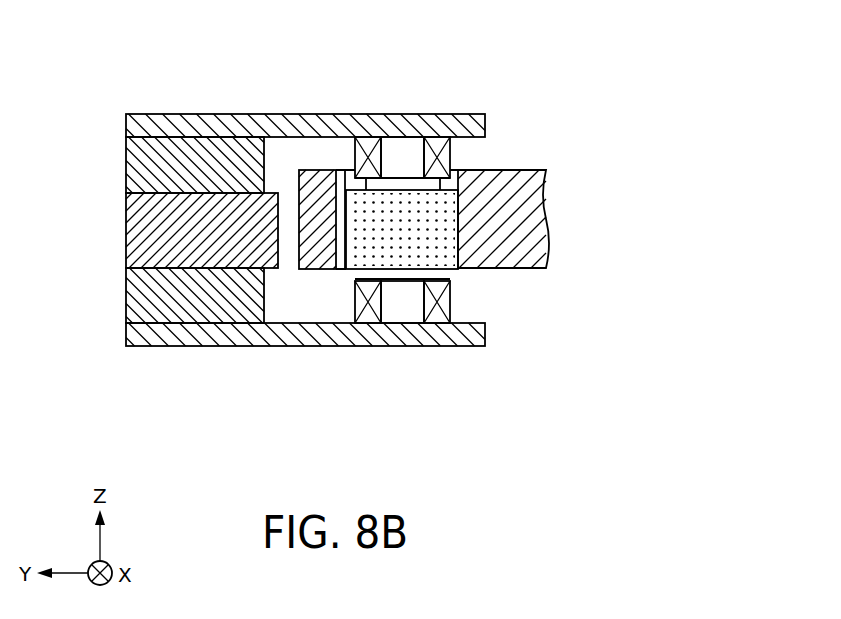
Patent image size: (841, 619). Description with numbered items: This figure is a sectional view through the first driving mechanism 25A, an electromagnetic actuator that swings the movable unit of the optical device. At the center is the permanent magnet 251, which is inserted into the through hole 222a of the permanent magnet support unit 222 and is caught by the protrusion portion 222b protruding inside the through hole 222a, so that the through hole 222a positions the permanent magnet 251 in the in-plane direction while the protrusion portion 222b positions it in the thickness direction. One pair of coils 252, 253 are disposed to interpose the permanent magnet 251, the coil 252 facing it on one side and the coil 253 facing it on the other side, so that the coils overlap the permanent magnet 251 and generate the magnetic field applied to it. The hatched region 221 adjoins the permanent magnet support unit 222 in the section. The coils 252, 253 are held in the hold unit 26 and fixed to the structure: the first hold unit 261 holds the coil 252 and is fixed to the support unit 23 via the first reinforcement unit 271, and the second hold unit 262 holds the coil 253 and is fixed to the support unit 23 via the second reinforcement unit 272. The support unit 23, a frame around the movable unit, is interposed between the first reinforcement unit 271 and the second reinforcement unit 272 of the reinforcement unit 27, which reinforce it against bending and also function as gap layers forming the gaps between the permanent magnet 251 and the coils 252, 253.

The first driving mechanism 25A is at (524, 88).
The support unit 23 is at (140, 226).
The fixed body portion 221 is at (528, 222).
The permanent magnet support unit 222 is at (320, 180).
The through hole 222a is at (336, 240).
The protrusion portion 222b is at (405, 152).
The permanent magnet 251 is at (437, 232).
The coil 252 is at (400, 182).
The coil 253 is at (403, 305).
The first hold unit 261 is at (250, 125).
The second hold unit 262 is at (358, 333).
The hold unit 26 is at (305, 236).
The first reinforcement unit 271 is at (173, 160).
The second reinforcement unit 272 is at (172, 300).
The reinforcement unit 27 is at (195, 237).